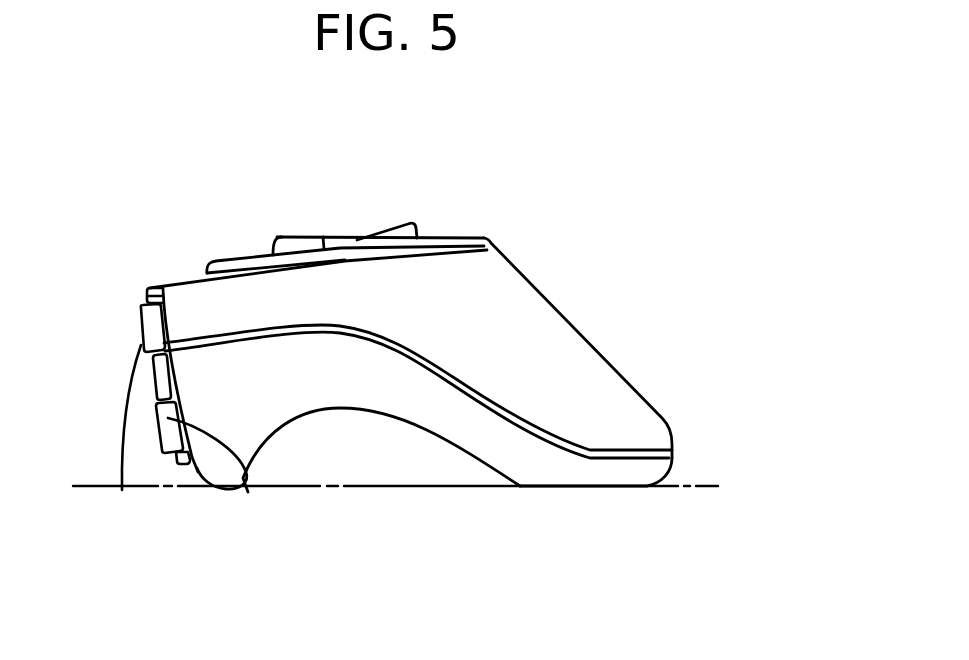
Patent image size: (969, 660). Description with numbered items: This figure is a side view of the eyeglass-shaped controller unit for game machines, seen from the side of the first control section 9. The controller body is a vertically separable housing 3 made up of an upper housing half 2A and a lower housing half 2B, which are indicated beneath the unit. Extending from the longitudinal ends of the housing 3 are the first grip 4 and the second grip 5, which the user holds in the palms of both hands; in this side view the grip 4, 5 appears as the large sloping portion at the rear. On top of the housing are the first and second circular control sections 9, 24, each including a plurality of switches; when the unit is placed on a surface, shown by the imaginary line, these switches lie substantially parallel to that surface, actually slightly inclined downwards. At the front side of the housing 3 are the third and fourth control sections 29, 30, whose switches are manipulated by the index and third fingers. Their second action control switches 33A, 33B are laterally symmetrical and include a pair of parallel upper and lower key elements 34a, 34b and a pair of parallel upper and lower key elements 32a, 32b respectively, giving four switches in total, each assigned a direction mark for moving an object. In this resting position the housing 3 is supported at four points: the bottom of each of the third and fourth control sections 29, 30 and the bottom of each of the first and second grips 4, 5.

The first grip 4 is at (421, 342).
The second grip 5 is at (627, 358).
The first circular control section 9 is at (378, 172).
The second circular control section 24 is at (332, 215).
The third control section 29 is at (117, 247).
The fourth control section 30 is at (139, 297).
The upper key element 32a is at (115, 438).
The upper key element 34a is at (122, 490).
The lower key element 32b is at (344, 490).
The lower key element 34b is at (248, 492).
The second action control switch 33A is at (274, 465).
The second action control switch 33B is at (274, 465).
The upper housing half 2A is at (628, 433).
The lower housing half 2B is at (690, 512).
The housing 3 is at (451, 474).